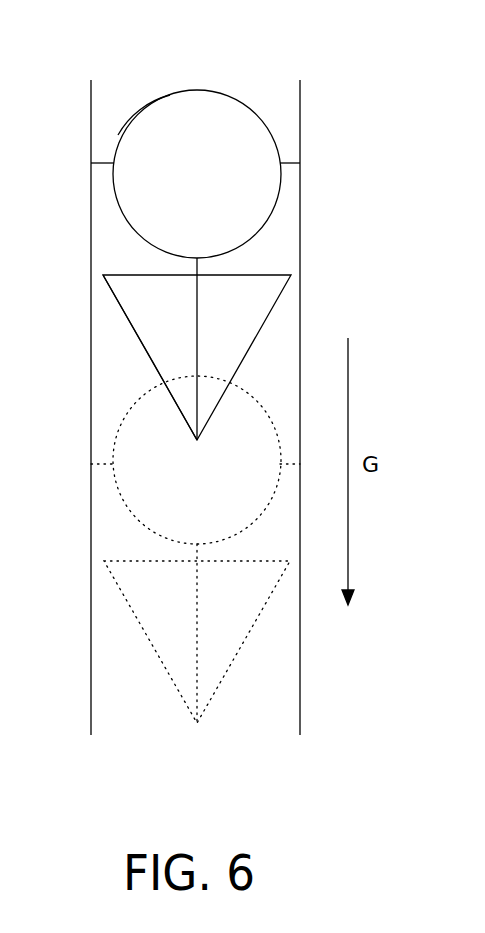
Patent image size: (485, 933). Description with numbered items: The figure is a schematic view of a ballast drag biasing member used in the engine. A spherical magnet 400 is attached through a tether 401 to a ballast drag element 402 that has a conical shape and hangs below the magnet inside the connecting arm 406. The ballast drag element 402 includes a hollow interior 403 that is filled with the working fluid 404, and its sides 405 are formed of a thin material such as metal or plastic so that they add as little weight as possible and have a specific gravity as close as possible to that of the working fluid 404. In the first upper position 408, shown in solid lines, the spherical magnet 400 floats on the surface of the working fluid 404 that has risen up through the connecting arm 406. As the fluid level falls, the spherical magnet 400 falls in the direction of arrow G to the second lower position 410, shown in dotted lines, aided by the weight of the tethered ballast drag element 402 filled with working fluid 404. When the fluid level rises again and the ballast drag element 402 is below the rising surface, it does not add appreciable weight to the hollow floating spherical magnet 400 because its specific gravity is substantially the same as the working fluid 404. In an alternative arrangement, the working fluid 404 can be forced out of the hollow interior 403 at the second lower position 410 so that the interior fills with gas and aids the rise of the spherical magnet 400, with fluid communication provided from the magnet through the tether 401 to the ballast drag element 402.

The spherical magnet 400 is at (165, 96).
The tether 401 is at (197, 267).
The ballast drag element 402 is at (128, 335).
The hollow interior 403 is at (170, 338).
The working fluid 404 is at (108, 165).
The sides 405 is at (116, 297).
The connecting arm 406 is at (302, 208).
The first upper position 408 is at (125, 130).
The second lower position 410 is at (121, 494).